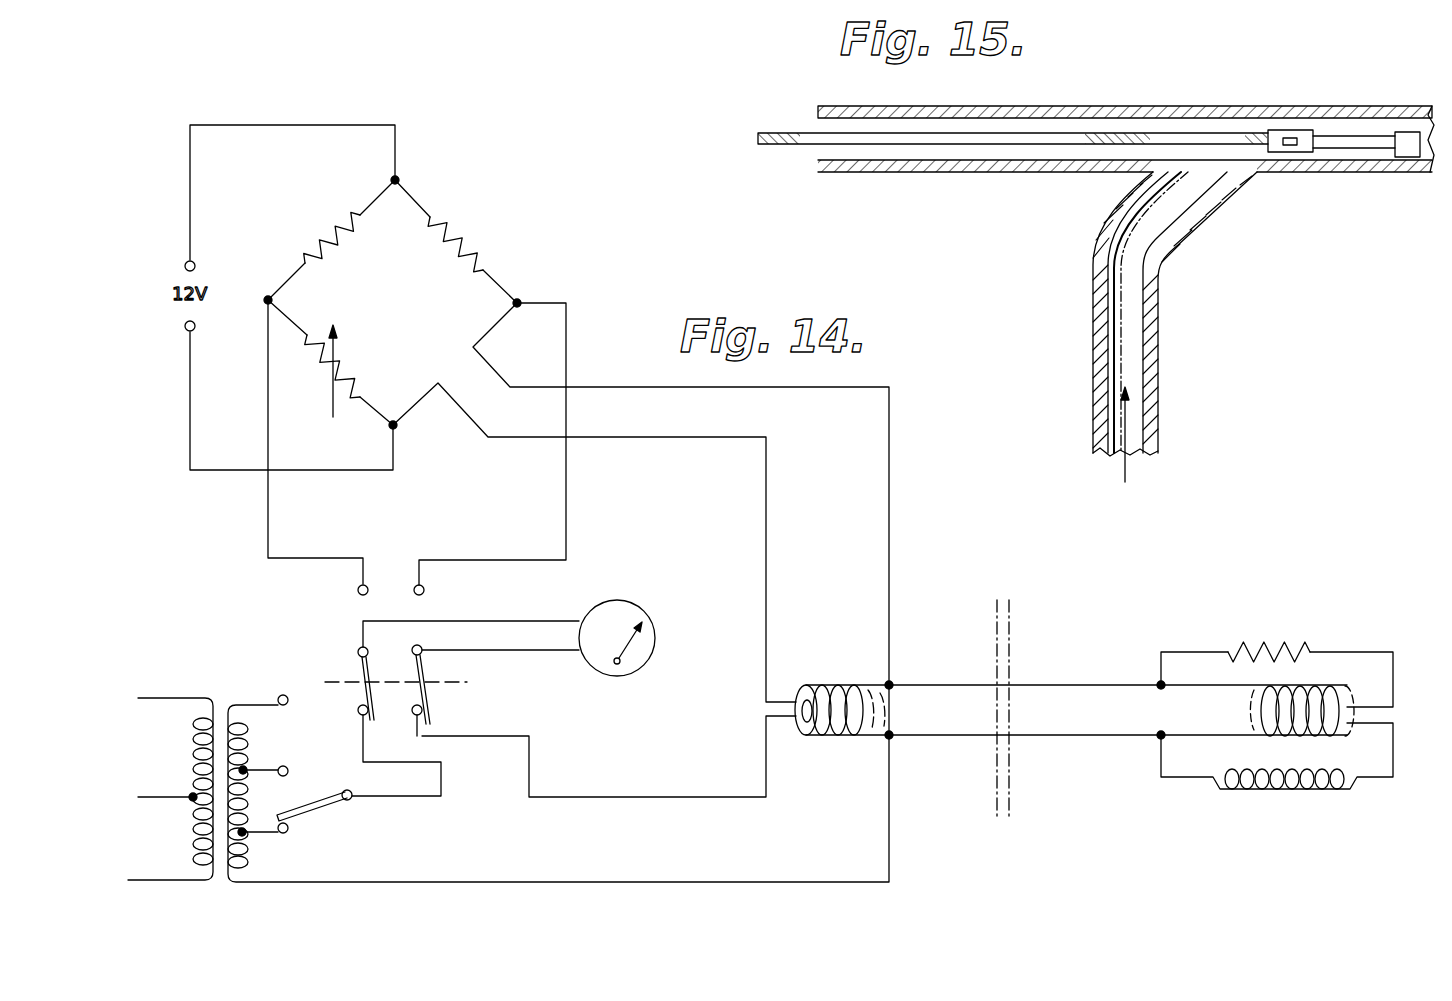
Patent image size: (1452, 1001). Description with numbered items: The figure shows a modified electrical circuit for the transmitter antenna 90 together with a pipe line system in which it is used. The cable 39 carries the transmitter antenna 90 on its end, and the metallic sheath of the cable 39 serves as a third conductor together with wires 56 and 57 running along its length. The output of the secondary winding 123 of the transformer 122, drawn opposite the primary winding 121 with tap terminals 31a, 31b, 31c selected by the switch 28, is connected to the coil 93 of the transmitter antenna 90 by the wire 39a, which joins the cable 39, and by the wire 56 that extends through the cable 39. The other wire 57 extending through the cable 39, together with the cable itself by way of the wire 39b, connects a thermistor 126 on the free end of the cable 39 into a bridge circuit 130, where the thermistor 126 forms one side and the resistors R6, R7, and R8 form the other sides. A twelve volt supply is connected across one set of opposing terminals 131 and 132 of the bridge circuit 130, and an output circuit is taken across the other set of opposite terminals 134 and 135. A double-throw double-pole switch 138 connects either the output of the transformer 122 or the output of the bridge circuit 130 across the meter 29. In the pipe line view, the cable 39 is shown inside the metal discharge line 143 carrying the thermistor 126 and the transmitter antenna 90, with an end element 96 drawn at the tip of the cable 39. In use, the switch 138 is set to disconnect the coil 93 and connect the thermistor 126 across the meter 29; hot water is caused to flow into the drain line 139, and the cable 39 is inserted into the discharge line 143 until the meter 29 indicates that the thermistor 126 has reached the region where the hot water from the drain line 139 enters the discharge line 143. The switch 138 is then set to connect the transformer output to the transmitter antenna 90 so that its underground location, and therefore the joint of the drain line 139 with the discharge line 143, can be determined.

In FIG. 14, the terminal 131 is at (397, 179).
In FIG. 14, the terminal 134 is at (266, 302).
In FIG. 14, the terminal 135 is at (519, 302).
In FIG. 14, the terminal 132 is at (395, 426).
In FIG. 14, the resistor R7 is at (331, 240).
In FIG. 14, the resistor R6 is at (456, 241).
In FIG. 14, the resistor R8 is at (330, 362).
In FIG. 14, the bridge circuit 130 is at (416, 310).
In FIG. 14, the wire 39b is at (889, 514).
In FIG. 14, the wire 57 is at (767, 557).
In FIG. 14, the wire 56 is at (715, 797).
In FIG. 14, the wire 39a is at (713, 882).
In FIG. 14, the transformer 122 is at (194, 761).
In FIG. 14, the primary winding 121 is at (193, 833).
In FIG. 14, the secondary winding 123 is at (246, 849).
In FIG. 14, the secondary tap terminal 31a is at (286, 694).
In FIG. 14, the secondary tap terminal 31b is at (286, 766).
In FIG. 14, the secondary tap terminal 31c is at (287, 832).
In FIG. 14, the switch 28 is at (330, 808).
In FIG. 14, the double-throw double-pole switch 138 is at (437, 700).
In FIG. 14, the meter 29 is at (635, 613).
In FIG. 14, the cable 39 is at (835, 727).
In FIG. 15, the cable 39 is at (913, 137).
In FIG. 14, the thermistor 126 is at (1273, 642).
In FIG. 15, the thermistor 126 is at (1293, 152).
In FIG. 14, the coil 93 is at (1275, 826).
In FIG. 14, the transmitter antenna 90 is at (1310, 805).
In FIG. 15, the transmitter antenna 90 is at (1298, 130).
In FIG. 15, the discharge line 143 is at (1130, 110).
In FIG. 15, the end plug 96 is at (1410, 165).
In FIG. 15, the drain line 139 is at (1150, 353).